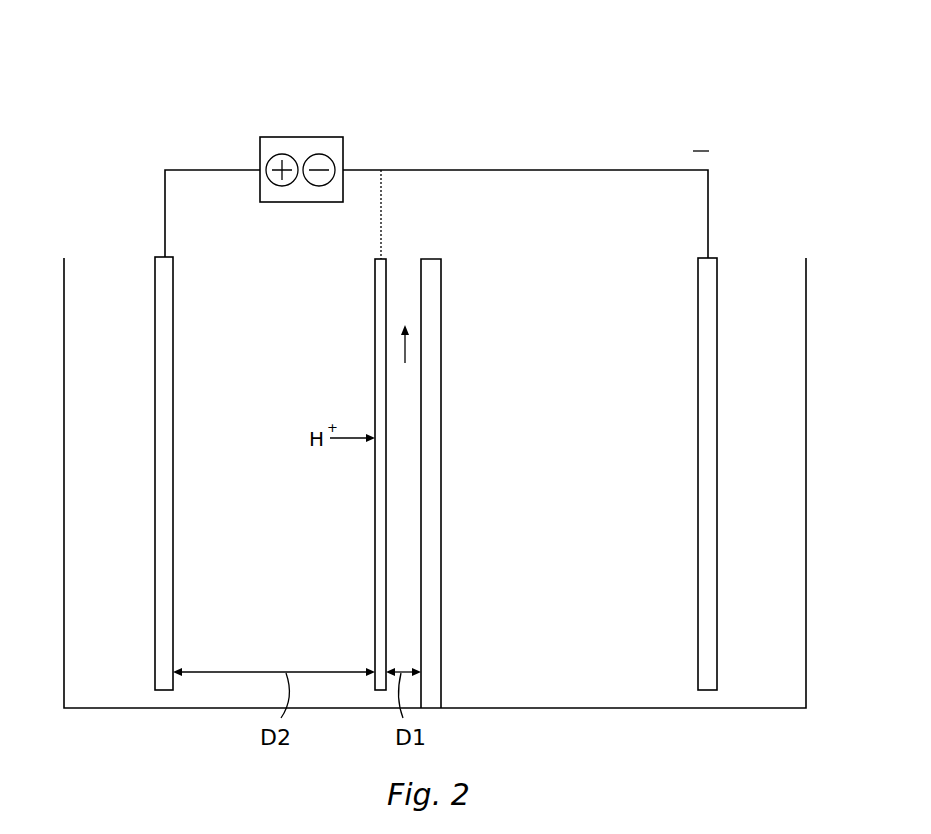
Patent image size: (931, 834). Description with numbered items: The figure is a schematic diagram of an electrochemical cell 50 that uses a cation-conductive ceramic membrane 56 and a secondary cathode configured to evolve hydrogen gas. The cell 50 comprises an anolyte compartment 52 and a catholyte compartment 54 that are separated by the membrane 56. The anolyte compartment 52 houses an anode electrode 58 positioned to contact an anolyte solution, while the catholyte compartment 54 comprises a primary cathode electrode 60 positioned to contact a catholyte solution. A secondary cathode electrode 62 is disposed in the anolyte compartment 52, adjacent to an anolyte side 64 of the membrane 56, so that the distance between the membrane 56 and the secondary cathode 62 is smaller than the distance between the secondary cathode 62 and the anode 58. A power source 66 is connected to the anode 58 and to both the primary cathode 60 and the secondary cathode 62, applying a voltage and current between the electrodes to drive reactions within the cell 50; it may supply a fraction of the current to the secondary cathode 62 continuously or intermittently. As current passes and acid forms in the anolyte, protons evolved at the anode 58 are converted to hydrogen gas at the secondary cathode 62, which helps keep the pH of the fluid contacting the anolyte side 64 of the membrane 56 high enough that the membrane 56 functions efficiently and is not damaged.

The electrochemical cell 50 is at (219, 90).
The anolyte compartment 52 is at (287, 514).
The catholyte compartment 54 is at (575, 514).
The cation-conductive ceramic membrane 56 is at (442, 336).
The anode electrode 58 is at (164, 420).
The primary cathode electrode 60 is at (706, 415).
The secondary cathode electrode 62 is at (375, 292).
The anolyte side 64 is at (421, 312).
The power source 66 is at (334, 137).